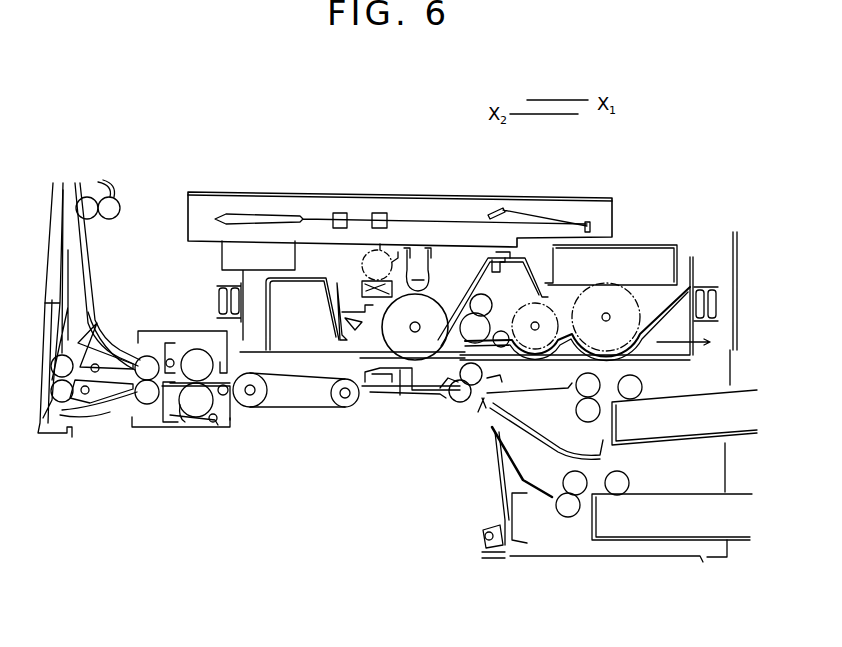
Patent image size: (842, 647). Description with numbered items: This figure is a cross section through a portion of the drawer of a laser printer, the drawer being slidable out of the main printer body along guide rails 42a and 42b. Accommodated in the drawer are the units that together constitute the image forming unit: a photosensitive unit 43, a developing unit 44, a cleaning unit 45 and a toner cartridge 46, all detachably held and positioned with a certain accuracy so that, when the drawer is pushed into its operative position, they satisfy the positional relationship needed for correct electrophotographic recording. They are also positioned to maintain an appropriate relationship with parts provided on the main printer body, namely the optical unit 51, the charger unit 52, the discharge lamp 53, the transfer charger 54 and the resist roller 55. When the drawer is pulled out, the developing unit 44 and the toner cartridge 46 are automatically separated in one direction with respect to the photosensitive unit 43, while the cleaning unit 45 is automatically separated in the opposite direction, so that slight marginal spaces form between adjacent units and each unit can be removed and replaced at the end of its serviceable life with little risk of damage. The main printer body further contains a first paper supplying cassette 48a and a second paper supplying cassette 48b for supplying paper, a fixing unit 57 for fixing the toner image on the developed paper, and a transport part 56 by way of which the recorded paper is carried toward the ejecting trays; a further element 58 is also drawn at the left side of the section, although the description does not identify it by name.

The guide rail 42a is at (708, 284).
The guide rail 42b is at (217, 301).
The photosensitive unit 43 is at (503, 212).
The developing unit 44 is at (653, 300).
The cleaning unit 45 is at (302, 292).
The toner cartridge 46 is at (633, 257).
The first paper supplying cassette 48a is at (717, 405).
The second paper supplying cassette 48b is at (733, 507).
The optical unit 51 is at (575, 212).
The charger unit 52 is at (415, 267).
The discharge lamp 53 is at (386, 257).
The transfer charger 54 is at (420, 393).
The resist roller 55 is at (458, 395).
The transport part 56 is at (292, 397).
The fixing unit 57 is at (173, 397).
The discharge duct 58 is at (102, 258).